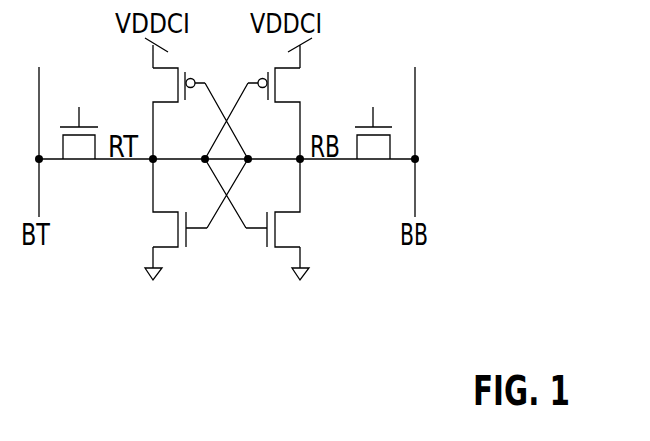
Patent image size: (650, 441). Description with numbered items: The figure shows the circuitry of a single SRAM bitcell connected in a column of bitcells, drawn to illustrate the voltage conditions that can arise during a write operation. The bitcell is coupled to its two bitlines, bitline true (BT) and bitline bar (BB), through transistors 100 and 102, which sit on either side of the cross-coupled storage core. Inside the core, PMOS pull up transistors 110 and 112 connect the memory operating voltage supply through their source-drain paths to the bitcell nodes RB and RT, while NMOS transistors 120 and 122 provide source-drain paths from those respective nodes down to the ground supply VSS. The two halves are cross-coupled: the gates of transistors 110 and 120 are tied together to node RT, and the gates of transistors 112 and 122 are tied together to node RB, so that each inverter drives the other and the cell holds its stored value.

The transistor 100 is at (379, 132).
The transistor 102 is at (76, 132).
The PMOS pull up transistor 110 is at (290, 98).
The PMOS pull up transistor 112 is at (163, 98).
The NMOS transistor 120 is at (291, 245).
The NMOS transistor 122 is at (162, 245).